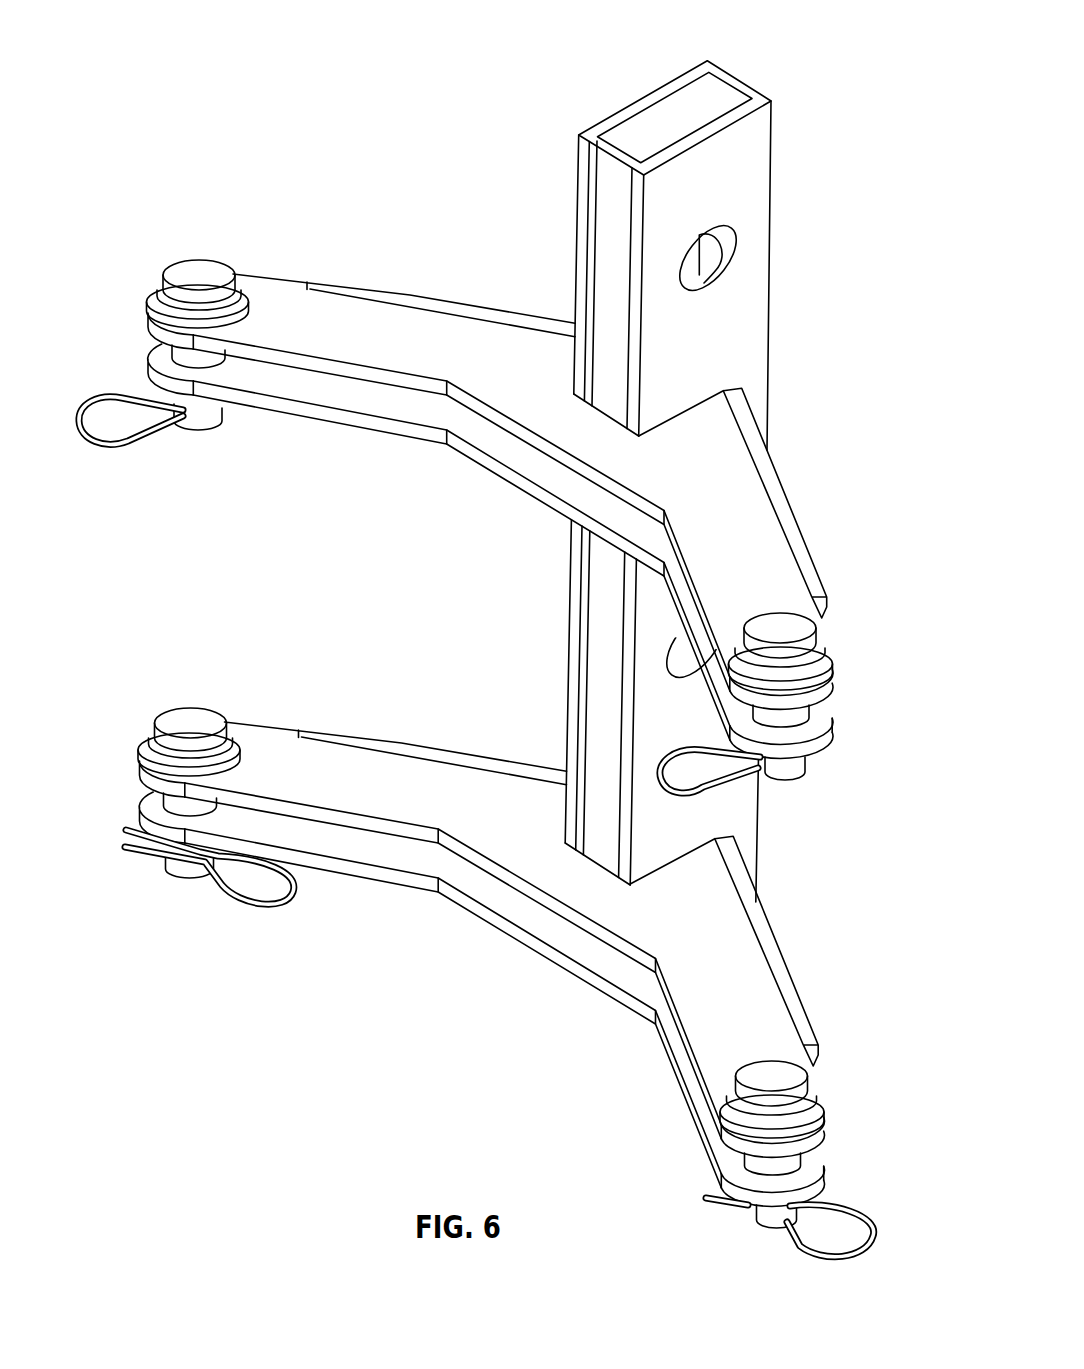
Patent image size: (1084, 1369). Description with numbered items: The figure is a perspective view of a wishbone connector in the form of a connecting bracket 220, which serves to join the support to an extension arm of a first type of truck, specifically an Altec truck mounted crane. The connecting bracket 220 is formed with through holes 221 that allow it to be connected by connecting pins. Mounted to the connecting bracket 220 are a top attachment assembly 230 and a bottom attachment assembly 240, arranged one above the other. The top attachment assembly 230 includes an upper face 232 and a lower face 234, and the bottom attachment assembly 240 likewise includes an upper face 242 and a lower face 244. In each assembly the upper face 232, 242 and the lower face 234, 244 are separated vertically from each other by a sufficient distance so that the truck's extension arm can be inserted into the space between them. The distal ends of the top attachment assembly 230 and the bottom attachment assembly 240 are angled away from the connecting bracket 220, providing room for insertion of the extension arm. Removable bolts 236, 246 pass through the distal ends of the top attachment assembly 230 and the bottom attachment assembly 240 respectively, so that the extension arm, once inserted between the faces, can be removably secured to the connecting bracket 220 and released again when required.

The connecting bracket 220 is at (692, 454).
The through holes 221 is at (733, 245).
The top attachment assembly 230 is at (500, 495).
The upper face 232 is at (304, 288).
The lower face 234 is at (302, 405).
The removable bolt 236 is at (200, 280).
The bottom attachment assembly 240 is at (481, 951).
The upper face 242 is at (323, 740).
The lower face 244 is at (346, 868).
The removable bolt 246 is at (195, 725).